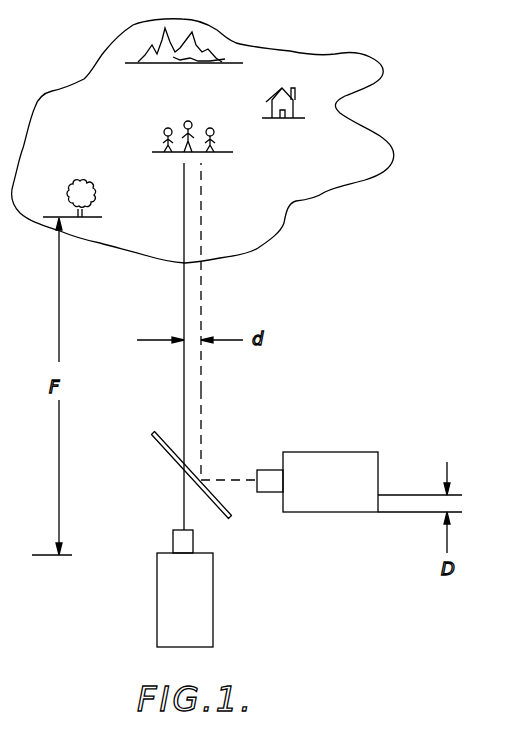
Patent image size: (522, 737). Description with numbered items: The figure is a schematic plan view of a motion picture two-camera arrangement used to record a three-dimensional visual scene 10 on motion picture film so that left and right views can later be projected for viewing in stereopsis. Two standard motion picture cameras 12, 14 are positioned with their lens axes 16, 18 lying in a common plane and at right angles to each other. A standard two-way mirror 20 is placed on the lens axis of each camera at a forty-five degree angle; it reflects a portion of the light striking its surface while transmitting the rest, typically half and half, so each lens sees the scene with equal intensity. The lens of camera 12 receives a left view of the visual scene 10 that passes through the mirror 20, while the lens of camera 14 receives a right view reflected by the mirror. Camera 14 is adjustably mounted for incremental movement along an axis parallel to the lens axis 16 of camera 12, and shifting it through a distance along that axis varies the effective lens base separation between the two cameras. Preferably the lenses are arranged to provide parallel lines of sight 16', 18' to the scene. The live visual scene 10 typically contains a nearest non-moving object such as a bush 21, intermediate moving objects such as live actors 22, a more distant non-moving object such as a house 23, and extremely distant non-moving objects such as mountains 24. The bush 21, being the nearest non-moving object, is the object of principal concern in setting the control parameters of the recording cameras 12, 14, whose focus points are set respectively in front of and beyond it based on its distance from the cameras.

The visual scene 10 is at (373, 137).
The motion picture camera 12 is at (213, 620).
The motion picture camera 14 is at (350, 452).
The lens axis 16 is at (159, 460).
The line of sight 16' is at (159, 280).
The lens axis 18 is at (229, 435).
The line of sight 18' is at (230, 282).
The two-way mirror 20 is at (230, 503).
The bush 21 is at (97, 195).
The live actors 22 is at (217, 143).
The house 23 is at (297, 98).
The mountains 24 is at (197, 55).